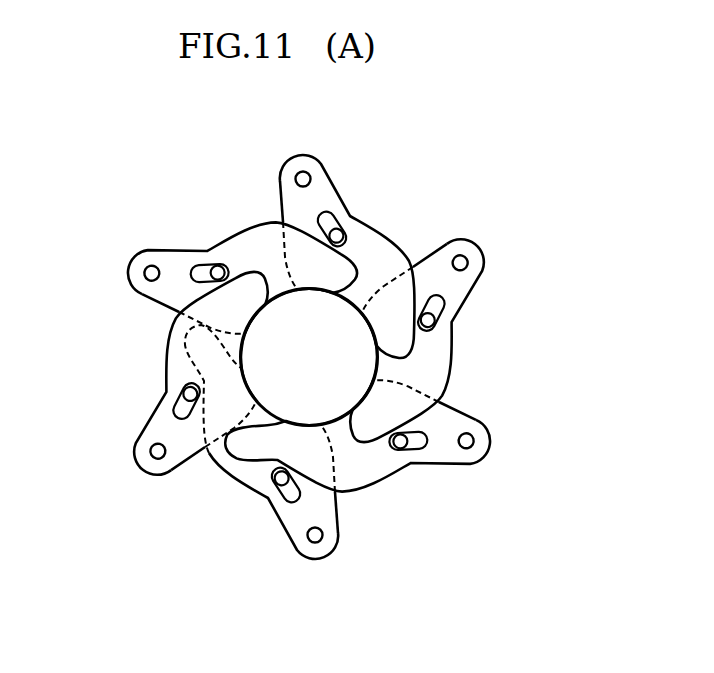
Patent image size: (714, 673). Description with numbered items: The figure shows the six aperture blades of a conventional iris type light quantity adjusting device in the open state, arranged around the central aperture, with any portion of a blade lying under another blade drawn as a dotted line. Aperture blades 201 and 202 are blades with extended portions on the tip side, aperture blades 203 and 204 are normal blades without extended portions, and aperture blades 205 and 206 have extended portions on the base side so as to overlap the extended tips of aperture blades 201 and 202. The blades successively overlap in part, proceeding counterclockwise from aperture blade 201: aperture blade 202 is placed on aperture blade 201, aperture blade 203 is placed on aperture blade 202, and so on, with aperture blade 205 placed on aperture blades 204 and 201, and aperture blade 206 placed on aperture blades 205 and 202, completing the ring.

The aperture blade 201 is at (314, 566).
The aperture blade 202 is at (473, 466).
The aperture blade 203 is at (462, 238).
The aperture blade 204 is at (298, 152).
The aperture blade 205 is at (132, 274).
The aperture blade 206 is at (145, 474).